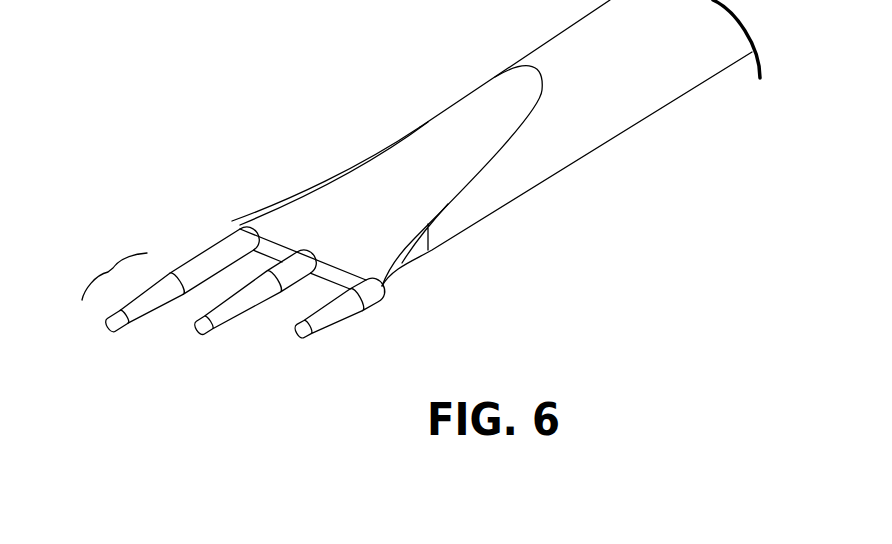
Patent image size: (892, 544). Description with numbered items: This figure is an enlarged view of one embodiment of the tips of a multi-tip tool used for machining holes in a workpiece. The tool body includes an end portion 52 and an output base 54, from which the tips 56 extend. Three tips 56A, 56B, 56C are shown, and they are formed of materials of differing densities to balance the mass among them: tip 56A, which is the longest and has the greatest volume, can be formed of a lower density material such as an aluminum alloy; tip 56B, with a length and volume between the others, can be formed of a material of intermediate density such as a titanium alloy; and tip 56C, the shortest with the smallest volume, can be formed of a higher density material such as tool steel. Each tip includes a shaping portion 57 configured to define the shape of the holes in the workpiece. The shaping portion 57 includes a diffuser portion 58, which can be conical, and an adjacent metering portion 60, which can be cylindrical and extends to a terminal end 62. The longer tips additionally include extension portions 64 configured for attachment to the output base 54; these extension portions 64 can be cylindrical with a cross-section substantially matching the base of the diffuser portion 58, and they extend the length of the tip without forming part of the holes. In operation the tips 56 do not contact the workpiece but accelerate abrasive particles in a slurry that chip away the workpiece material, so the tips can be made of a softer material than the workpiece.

The end portion 52 is at (480, 203).
The output base 54 is at (328, 277).
The tips 56 is at (100, 213).
The tip 56A is at (166, 272).
The tip 56B is at (310, 260).
The tip 56C is at (329, 330).
The shaping portion 57 is at (114, 272).
The diffuser portion 58 is at (161, 296).
The metering portion 60 is at (121, 326).
The terminal end 62 is at (309, 324).
The extension portion 64 is at (178, 267).